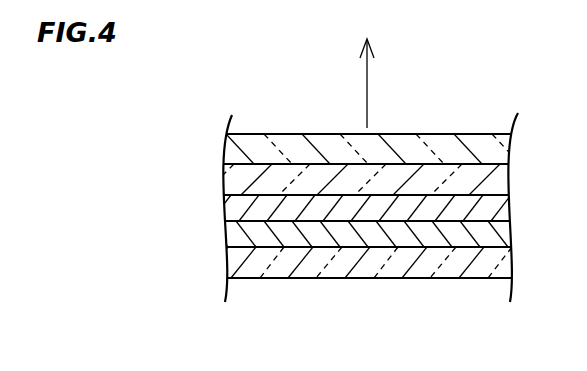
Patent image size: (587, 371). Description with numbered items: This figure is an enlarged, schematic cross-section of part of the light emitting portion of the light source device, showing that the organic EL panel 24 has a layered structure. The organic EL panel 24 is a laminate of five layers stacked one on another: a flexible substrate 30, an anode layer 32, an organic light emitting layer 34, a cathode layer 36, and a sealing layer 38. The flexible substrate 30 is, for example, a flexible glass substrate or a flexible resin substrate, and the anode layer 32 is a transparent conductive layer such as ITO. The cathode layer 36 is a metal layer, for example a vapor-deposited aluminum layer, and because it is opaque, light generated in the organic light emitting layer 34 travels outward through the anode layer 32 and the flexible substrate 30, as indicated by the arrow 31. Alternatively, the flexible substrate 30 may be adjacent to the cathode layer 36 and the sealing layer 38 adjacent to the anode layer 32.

The organic EL panel 24 is at (258, 131).
The flexible substrate 30 is at (468, 148).
The arrow 31 is at (369, 79).
The anode layer 32 is at (427, 180).
The organic light emitting layer 34 is at (371, 211).
The cathode layer 36 is at (314, 232).
The sealing layer 38 is at (263, 270).